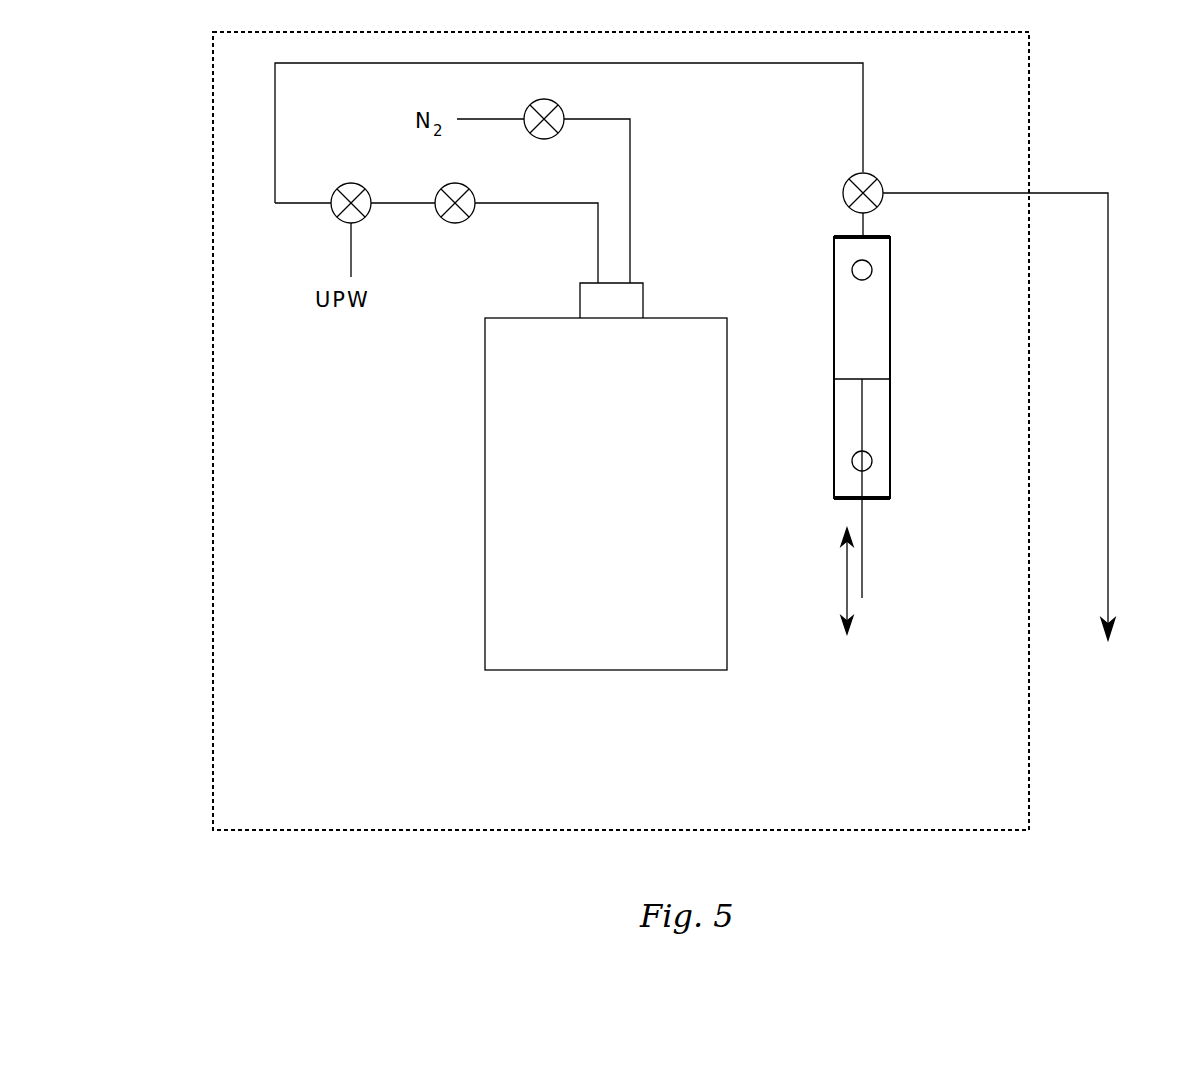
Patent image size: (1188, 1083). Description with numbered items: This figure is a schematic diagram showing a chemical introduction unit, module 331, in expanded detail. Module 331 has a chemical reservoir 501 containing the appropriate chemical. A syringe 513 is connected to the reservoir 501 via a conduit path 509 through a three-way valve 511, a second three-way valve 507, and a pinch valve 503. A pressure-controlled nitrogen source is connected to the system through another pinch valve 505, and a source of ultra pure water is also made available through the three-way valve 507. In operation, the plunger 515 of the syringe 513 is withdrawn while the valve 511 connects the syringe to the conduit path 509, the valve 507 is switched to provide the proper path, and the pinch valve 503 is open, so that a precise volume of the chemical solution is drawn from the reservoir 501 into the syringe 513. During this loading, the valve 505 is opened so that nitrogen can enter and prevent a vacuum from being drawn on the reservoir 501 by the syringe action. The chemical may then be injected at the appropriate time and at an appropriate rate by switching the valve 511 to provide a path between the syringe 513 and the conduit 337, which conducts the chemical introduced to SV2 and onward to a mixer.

The module 331 is at (208, 442).
The conduit 337 is at (918, 195).
The chemical reservoir 501 is at (485, 497).
The pinch valve 503 is at (452, 224).
The pinch valve 505 is at (543, 140).
The three-way valve 507 is at (350, 182).
The conduit path 509 is at (525, 202).
The three-way valve 511 is at (841, 197).
The syringe 513 is at (835, 352).
The plunger 515 is at (863, 577).